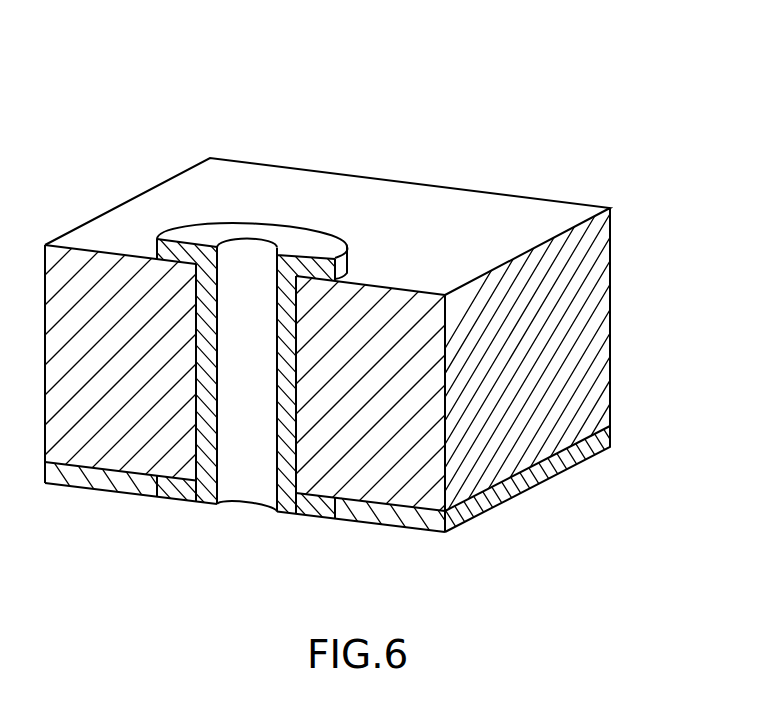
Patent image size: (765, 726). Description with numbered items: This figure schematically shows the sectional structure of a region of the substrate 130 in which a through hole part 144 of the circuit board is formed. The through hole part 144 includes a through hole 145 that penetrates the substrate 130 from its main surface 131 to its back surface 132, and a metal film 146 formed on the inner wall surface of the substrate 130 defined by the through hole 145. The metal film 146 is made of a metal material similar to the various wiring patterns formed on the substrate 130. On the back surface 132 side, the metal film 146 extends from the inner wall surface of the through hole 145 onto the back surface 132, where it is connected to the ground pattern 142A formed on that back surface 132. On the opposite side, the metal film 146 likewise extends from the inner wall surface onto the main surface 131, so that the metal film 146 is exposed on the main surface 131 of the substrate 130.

The substrate 130 is at (556, 203).
The main surface 131 is at (513, 220).
The back surface 132 is at (553, 458).
The ground pattern 142A is at (93, 490).
The through hole part 144 is at (297, 108).
The through hole 145 is at (208, 294).
The metal film 146 is at (250, 257).